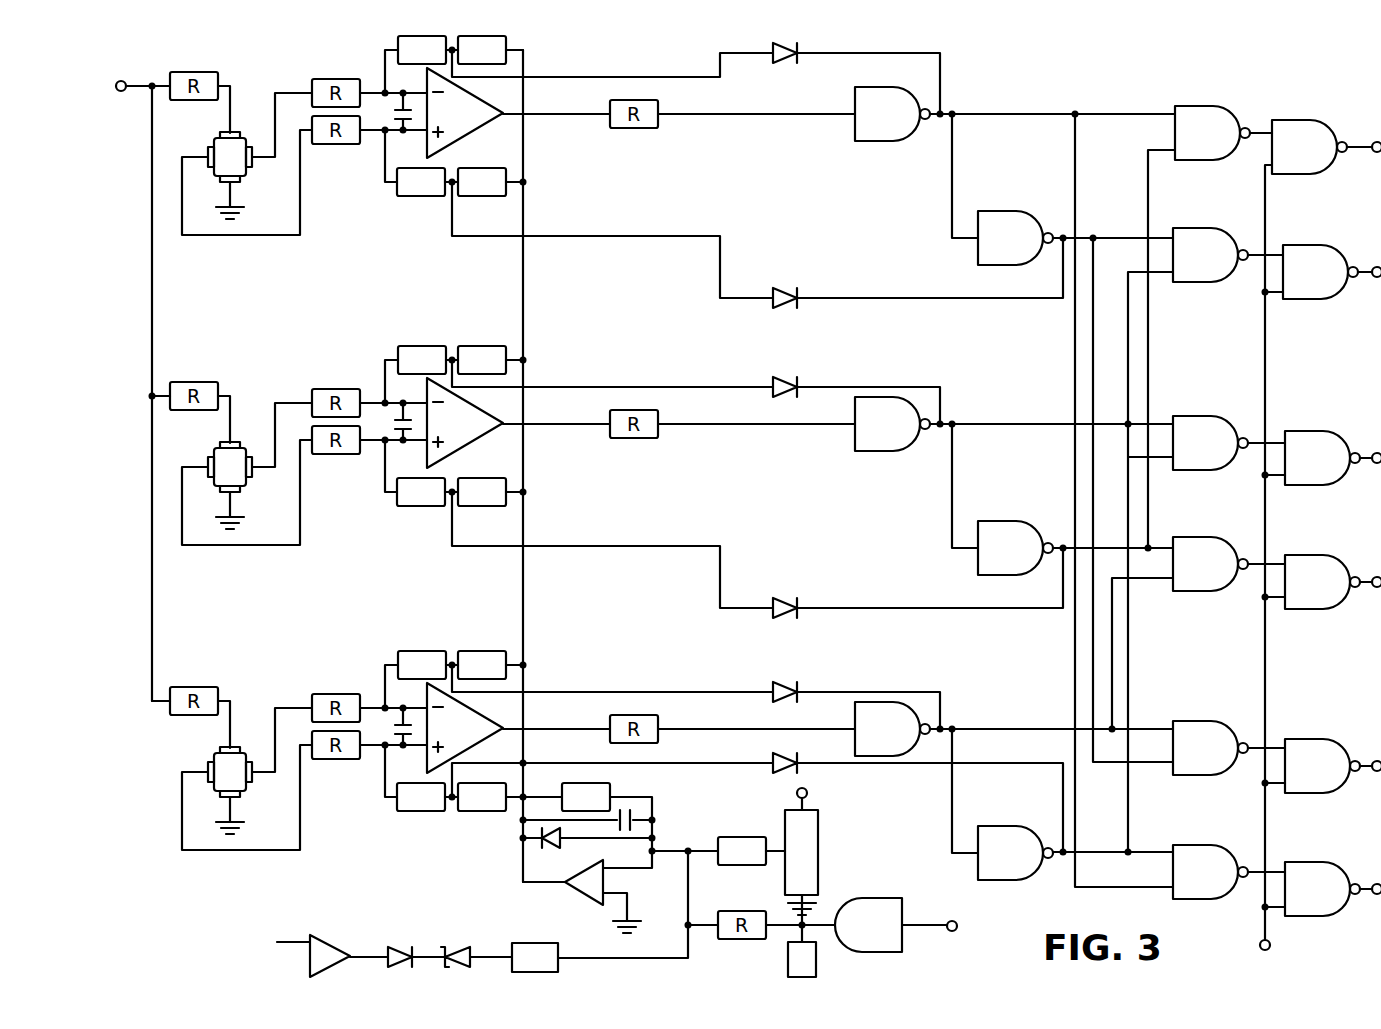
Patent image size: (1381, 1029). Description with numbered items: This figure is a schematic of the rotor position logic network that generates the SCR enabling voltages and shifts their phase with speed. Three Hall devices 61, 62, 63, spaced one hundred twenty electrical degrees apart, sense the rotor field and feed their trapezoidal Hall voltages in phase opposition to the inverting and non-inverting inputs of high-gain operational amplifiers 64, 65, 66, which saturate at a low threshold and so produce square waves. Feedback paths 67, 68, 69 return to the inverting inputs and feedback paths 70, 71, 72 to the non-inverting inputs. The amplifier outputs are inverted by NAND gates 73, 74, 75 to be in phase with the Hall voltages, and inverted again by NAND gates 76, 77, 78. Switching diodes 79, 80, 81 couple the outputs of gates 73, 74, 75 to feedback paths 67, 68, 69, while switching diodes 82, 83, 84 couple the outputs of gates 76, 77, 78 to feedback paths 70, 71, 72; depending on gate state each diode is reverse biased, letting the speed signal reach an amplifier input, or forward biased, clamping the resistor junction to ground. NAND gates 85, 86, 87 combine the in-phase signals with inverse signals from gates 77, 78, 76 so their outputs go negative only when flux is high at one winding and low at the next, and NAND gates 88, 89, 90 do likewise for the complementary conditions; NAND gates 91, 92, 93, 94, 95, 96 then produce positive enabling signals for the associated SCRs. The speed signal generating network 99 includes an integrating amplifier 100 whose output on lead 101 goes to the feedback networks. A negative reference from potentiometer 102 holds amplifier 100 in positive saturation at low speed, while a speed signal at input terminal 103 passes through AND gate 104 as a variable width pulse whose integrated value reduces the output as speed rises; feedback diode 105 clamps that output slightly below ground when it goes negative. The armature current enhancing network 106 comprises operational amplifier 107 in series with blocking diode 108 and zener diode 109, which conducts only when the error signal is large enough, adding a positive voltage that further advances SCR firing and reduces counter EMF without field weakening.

The Hall device 61 is at (241, 133).
The Hall device 62 is at (234, 443).
The Hall device 63 is at (235, 743).
The operational amplifier 64 is at (465, 132).
The operational amplifier 65 is at (469, 423).
The operational amplifier 66 is at (471, 728).
The feedback path 67 is at (453, 33).
The feedback path 68 is at (452, 336).
The feedback path 69 is at (452, 646).
The feedback path 70 is at (450, 197).
The feedback path 71 is at (451, 510).
The feedback path 72 is at (451, 818).
The inverting NAND gate 73 is at (855, 140).
The inverting NAND gate 74 is at (892, 442).
The inverting NAND gate 75 is at (892, 705).
The NAND gate 76 is at (1031, 192).
The NAND gate 77 is at (1015, 530).
The NAND gate 78 is at (1015, 839).
The switching diode 79 is at (790, 66).
The switching diode 80 is at (804, 367).
The switching diode 81 is at (801, 673).
The switching diode 82 is at (797, 294).
The switching diode 83 is at (803, 590).
The switching diode 84 is at (765, 755).
The NAND gate 85 is at (1213, 107).
The NAND gate 86 is at (1207, 416).
The NAND gate 87 is at (1225, 700).
The NAND gate 88 is at (1203, 228).
The NAND gate 89 is at (1232, 520).
The NAND gate 90 is at (1220, 825).
The NAND gate 91 is at (1325, 100).
The NAND gate 92 is at (1322, 431).
The NAND gate 93 is at (1335, 715).
The NAND gate 94 is at (1300, 246).
The NAND gate 95 is at (1345, 540).
The NAND gate 96 is at (1325, 850).
The machine speed signal generating network 99 is at (720, 803).
The integrating amplifier 100 is at (580, 893).
The lead 101 is at (524, 610).
The reference potentiometer 102 is at (812, 855).
The input terminal 103 is at (955, 922).
The AND gate 104 is at (895, 945).
The feedback diode 105 is at (545, 846).
The armature current enhancing network 106 is at (385, 911).
The operational amplifier 107 is at (312, 935).
The blocking diode 108 is at (408, 936).
The zener diode 109 is at (462, 946).